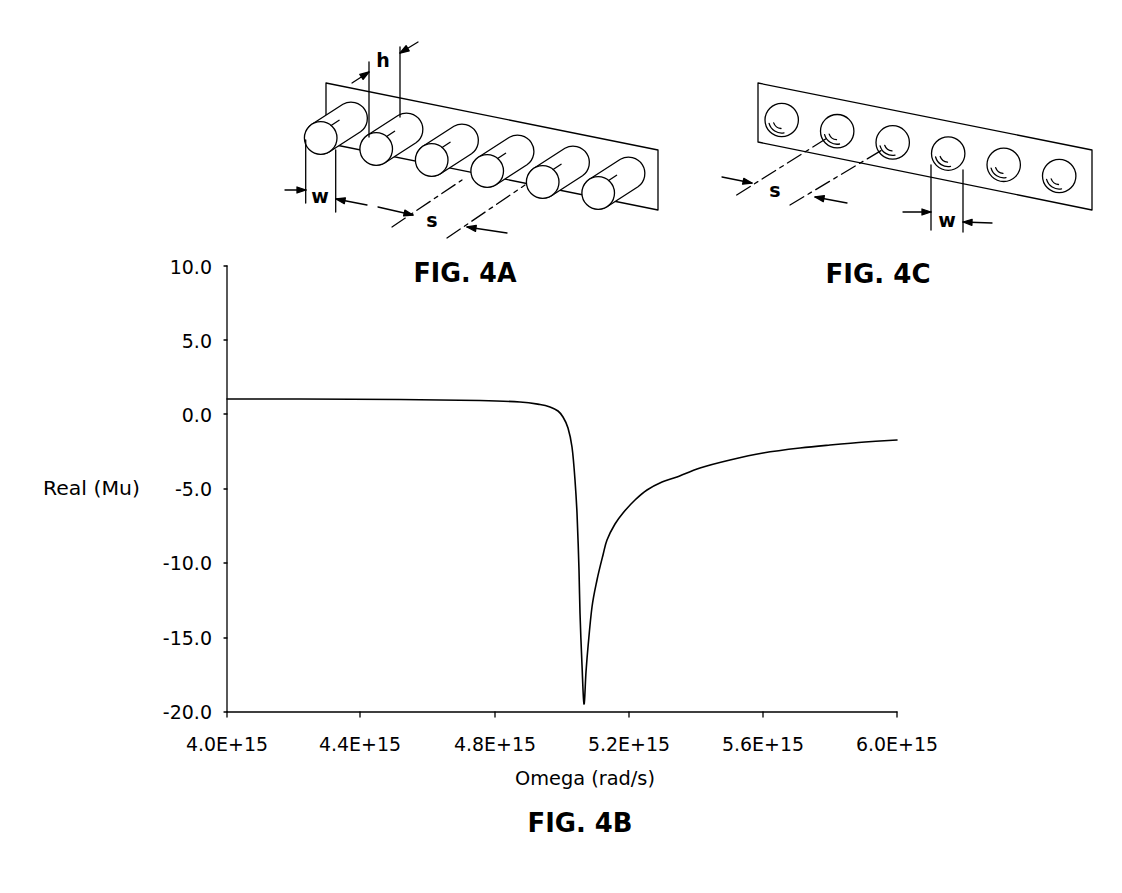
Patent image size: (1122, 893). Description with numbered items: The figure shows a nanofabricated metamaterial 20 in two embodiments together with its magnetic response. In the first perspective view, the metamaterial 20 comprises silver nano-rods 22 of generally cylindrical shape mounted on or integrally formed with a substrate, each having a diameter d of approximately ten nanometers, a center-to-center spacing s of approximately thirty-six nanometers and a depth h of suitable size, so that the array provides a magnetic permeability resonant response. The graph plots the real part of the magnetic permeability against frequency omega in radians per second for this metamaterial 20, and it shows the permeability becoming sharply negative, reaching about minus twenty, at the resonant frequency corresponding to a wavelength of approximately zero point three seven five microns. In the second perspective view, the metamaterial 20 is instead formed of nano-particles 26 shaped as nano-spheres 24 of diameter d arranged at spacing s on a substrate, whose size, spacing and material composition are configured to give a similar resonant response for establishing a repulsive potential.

In FIG. 4A, the metamaterial 20 is at (542, 107).
In FIG. 4C, the metamaterial 20 is at (1022, 117).
In FIG. 4A, the nano-rods 22 is at (474, 131).
In FIG. 4C, the nano-spheres 24 is at (882, 183).
In FIG. 4A, the nano-particles 26 is at (420, 120).
In FIG. 4C, the nano-particles 26 is at (770, 120).